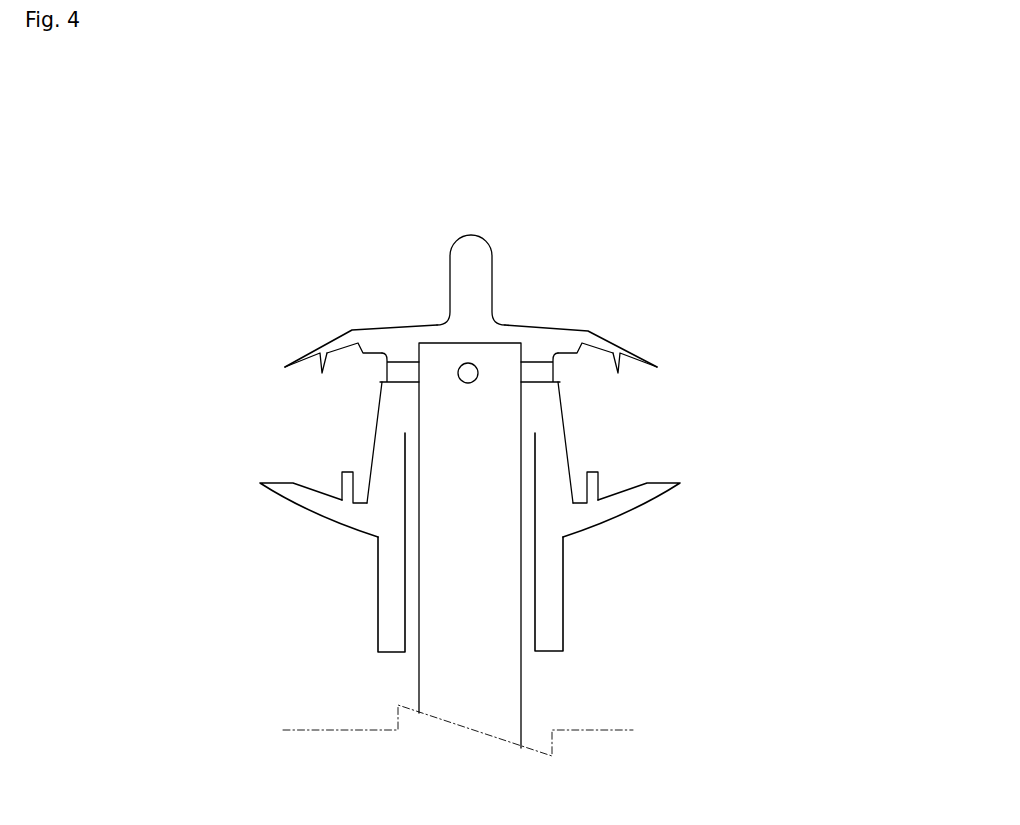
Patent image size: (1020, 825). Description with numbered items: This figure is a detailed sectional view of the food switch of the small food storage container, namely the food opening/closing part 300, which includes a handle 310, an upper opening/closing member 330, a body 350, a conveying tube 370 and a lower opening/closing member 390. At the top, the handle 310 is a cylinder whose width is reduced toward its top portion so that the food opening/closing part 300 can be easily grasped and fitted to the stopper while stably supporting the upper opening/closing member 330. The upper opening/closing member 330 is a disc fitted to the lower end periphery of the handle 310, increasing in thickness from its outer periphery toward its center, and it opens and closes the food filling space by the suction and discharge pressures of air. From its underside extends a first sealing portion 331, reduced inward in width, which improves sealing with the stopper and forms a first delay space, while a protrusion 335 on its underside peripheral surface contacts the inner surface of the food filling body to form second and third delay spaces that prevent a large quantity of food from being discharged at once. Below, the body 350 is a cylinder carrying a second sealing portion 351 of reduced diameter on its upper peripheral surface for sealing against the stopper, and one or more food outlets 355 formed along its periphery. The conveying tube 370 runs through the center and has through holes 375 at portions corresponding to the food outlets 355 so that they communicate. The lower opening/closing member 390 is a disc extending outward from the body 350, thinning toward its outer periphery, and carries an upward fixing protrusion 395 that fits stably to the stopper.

The food opening/closing part 300 is at (173, 172).
The handle 310 is at (477, 302).
The upper opening/closing member 330 is at (397, 336).
The protrusion 335 is at (319, 358).
The first sealing portion 331 is at (358, 350).
The food outlet 355 is at (547, 375).
The second sealing portion 351 is at (568, 443).
The lower opening/closing member 390 is at (638, 508).
The fixing protrusion 395 is at (340, 470).
The body 350 is at (548, 587).
The conveying tube 370 is at (437, 688).
The through hole 375 is at (469, 376).